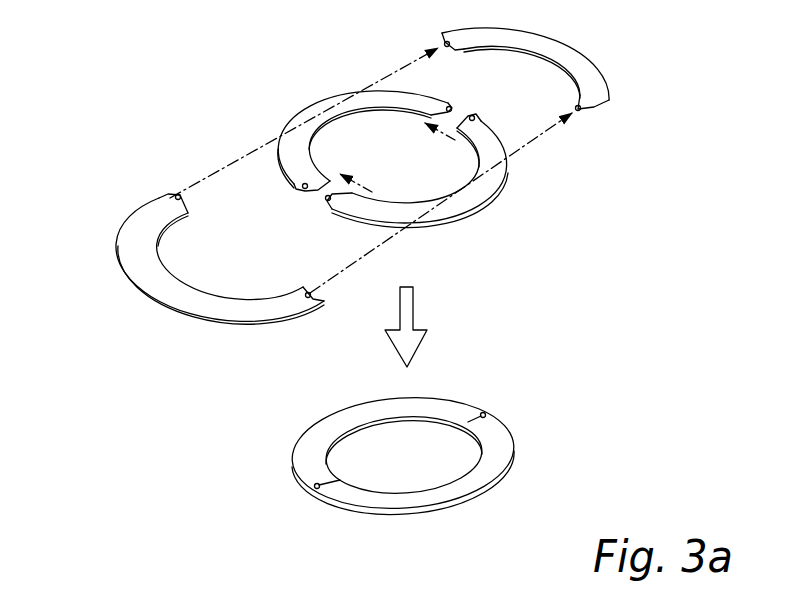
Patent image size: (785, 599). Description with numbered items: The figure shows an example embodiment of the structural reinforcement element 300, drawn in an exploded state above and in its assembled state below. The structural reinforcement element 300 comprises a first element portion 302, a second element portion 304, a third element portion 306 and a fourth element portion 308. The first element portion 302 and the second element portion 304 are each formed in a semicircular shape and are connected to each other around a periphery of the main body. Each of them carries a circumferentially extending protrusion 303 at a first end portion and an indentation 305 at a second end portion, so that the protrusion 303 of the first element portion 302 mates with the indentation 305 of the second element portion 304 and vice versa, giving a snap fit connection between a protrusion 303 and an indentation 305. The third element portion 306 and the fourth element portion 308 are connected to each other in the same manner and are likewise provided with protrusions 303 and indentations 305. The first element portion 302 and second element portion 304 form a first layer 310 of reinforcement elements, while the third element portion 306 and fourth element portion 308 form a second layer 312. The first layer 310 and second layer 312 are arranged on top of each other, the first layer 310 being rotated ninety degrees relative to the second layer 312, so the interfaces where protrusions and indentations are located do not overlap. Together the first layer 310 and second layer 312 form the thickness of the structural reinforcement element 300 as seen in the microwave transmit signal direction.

The structural reinforcement element 300 is at (567, 266).
The first element portion 302 is at (287, 150).
The protrusion 303 is at (178, 193).
The second element portion 304 is at (467, 198).
The indentation 305 is at (300, 188).
The third element portion 306 is at (142, 285).
The fourth element portion 308 is at (575, 50).
The first layer 310 is at (318, 84).
The second layer 312 is at (202, 347).